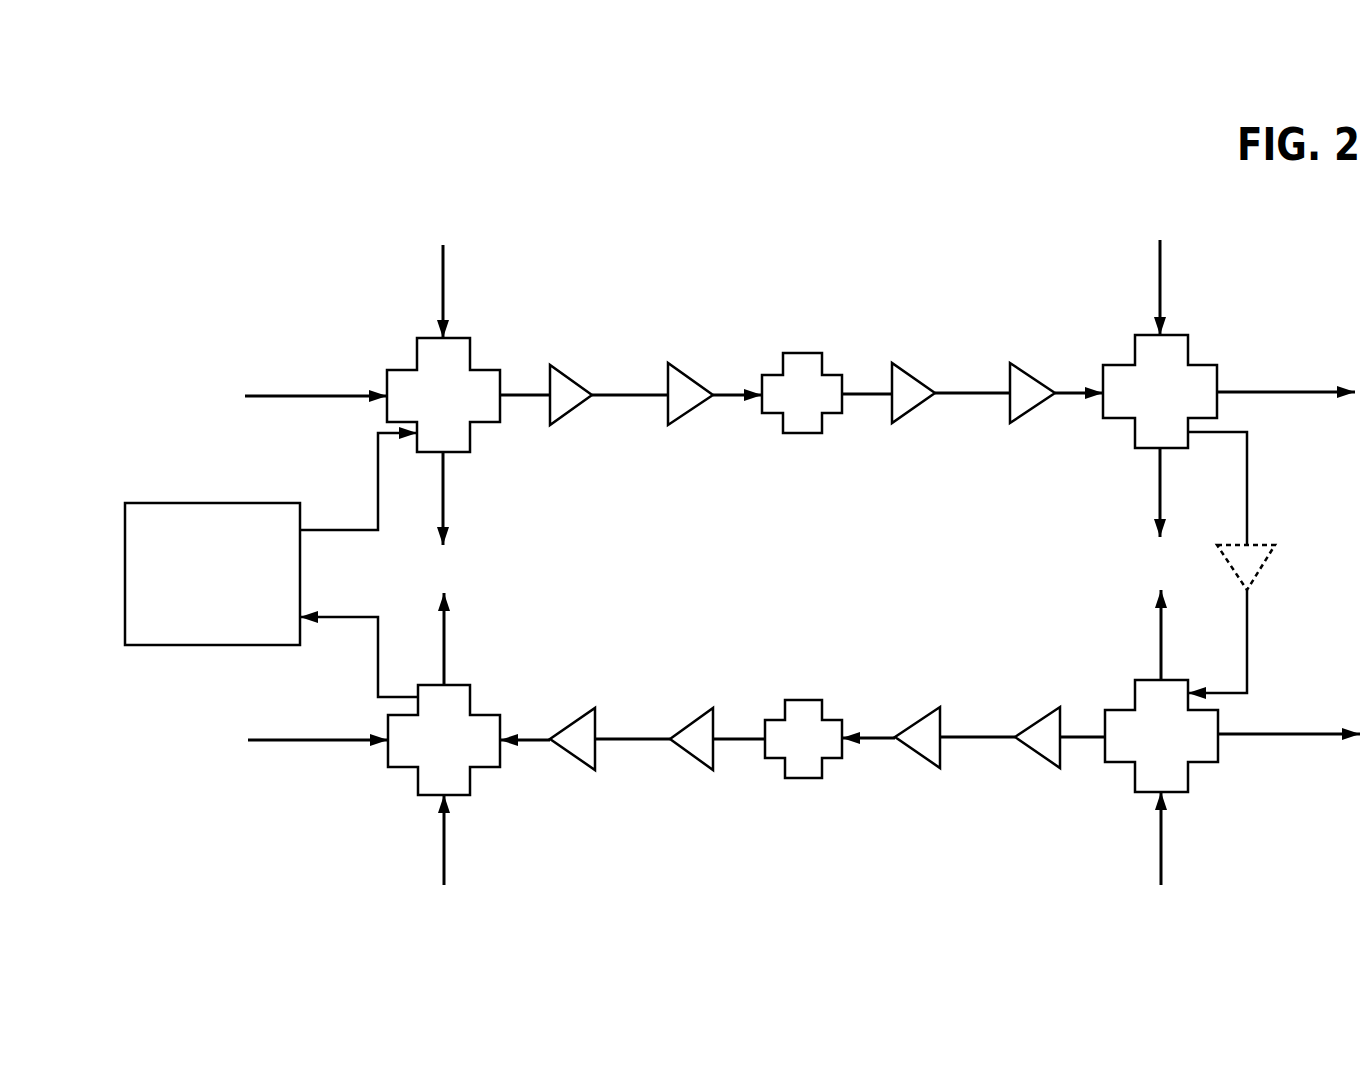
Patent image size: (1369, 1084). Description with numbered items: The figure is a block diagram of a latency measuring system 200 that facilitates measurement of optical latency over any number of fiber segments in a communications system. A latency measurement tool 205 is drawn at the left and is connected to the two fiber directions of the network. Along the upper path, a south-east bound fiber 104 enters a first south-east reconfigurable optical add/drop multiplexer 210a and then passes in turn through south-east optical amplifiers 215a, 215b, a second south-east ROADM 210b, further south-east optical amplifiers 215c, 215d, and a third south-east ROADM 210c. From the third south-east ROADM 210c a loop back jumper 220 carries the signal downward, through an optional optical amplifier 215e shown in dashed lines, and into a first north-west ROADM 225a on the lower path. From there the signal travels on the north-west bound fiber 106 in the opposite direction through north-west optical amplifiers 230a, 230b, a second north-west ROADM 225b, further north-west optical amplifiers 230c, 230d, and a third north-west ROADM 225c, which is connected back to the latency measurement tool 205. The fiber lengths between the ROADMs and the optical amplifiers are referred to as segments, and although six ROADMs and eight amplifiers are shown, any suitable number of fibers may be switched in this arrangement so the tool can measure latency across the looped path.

The latency measuring system 200 is at (330, 270).
The south-east bound fiber 104 is at (320, 393).
The north-west bound fiber 106 is at (345, 742).
The latency measurement tool 205 is at (172, 622).
The south-east reconfigurable optical add/drop multiplexer 210a is at (453, 408).
The south-east reconfigurable optical add/drop multiplexer 210b is at (792, 405).
The south-east reconfigurable optical add/drop multiplexer 210c is at (1145, 410).
The south-east optical amplifier 215a is at (565, 393).
The south-east optical amplifier 215b is at (680, 395).
The south-east optical amplifier 215c is at (906, 395).
The south-east optical amplifier 215d is at (1027, 393).
The optional optical amplifier 215e is at (1243, 563).
The loop back jumper 220 is at (1248, 643).
The north-west reconfigurable optical add/drop multiplexer 225a is at (1167, 743).
The north-west reconfigurable optical add/drop multiplexer 225b is at (810, 730).
The north-west reconfigurable optical add/drop multiplexer 225c is at (458, 730).
The north-west optical amplifier 230a is at (1038, 743).
The north-west optical amplifier 230b is at (923, 737).
The north-west optical amplifier 230c is at (695, 740).
The north-west optical amplifier 230d is at (578, 742).